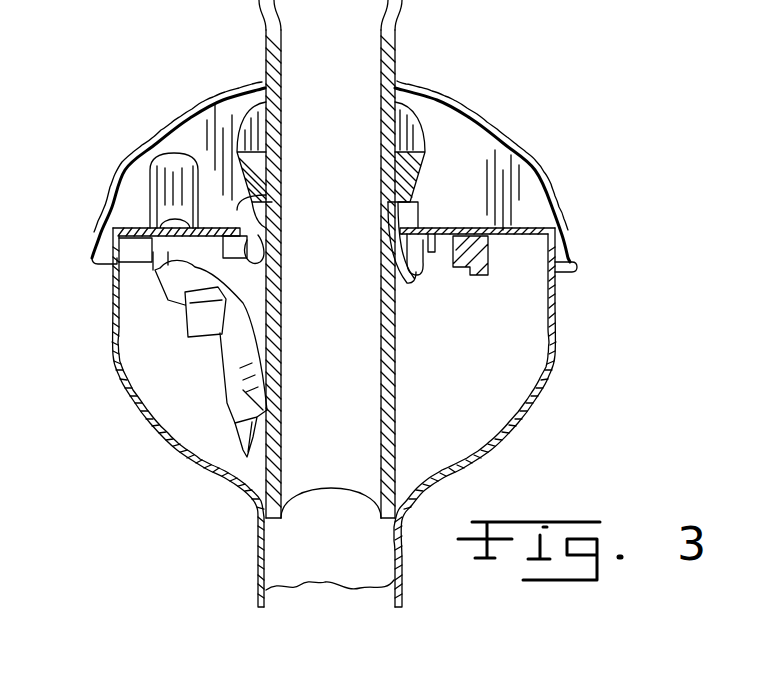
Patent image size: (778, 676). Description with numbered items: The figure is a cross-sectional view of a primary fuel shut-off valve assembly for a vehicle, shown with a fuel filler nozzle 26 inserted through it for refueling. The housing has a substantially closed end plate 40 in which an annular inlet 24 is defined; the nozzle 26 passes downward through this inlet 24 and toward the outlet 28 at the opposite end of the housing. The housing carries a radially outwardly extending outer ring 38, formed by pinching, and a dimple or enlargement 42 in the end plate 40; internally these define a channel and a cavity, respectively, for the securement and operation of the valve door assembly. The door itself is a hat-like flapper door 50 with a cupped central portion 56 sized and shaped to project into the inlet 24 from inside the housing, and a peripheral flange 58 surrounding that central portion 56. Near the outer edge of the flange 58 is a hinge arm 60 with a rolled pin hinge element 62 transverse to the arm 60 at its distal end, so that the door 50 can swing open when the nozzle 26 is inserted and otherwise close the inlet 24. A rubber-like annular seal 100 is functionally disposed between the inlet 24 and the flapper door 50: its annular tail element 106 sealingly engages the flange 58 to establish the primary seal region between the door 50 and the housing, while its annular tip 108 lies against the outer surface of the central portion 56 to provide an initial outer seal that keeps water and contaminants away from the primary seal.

The annular inlet 24 is at (422, 208).
The fuel filler nozzle 26 is at (387, 50).
The outlet 28 is at (313, 563).
The outer ring 38 is at (565, 247).
The end plate 40 is at (518, 210).
The enlargement 42 is at (173, 170).
The flapper door 50 is at (203, 377).
The central portion 56 is at (242, 327).
The peripheral flange 58 is at (250, 432).
The hinge arm 60 is at (153, 258).
The rolled pin hinge element 62 is at (125, 222).
The seal 100 is at (416, 283).
The annular tail element 106 is at (420, 273).
The annular tip 108 is at (243, 205).